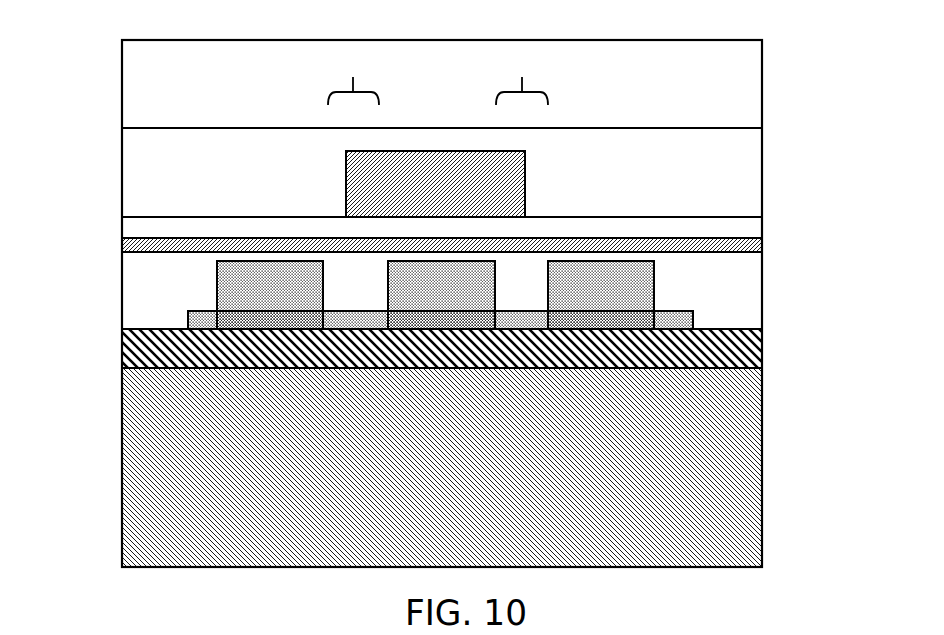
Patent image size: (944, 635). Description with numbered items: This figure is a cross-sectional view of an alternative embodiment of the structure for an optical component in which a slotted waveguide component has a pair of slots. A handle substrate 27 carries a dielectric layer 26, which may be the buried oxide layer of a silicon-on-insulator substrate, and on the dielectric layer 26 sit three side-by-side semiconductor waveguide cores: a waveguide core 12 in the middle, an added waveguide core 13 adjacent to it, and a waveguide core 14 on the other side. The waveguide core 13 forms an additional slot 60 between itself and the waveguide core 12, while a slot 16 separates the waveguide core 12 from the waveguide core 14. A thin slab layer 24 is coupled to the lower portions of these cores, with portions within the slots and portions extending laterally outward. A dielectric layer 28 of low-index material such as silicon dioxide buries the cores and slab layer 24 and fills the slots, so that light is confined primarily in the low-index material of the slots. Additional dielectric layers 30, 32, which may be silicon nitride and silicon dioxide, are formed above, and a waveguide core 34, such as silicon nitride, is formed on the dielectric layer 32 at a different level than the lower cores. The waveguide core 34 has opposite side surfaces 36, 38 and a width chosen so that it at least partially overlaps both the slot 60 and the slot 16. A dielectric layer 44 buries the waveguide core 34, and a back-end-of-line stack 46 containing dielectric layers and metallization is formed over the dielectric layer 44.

The waveguide core 12 is at (425, 294).
The waveguide core 13 is at (238, 284).
The waveguide core 14 is at (620, 289).
The slot 16 is at (522, 75).
The slab layer 24 is at (200, 318).
The dielectric layer 26 is at (720, 350).
The handle substrate 27 is at (150, 485).
The dielectric layer 28 is at (140, 294).
The dielectric layer 30 is at (745, 245).
The dielectric layer 32 is at (140, 230).
The waveguide core 34 is at (487, 170).
The side surface 36 is at (346, 183).
The side surface 38 is at (525, 197).
The dielectric layer 44 is at (140, 153).
The back-end-of-line stack 46 is at (720, 87).
The slot 60 is at (353, 76).